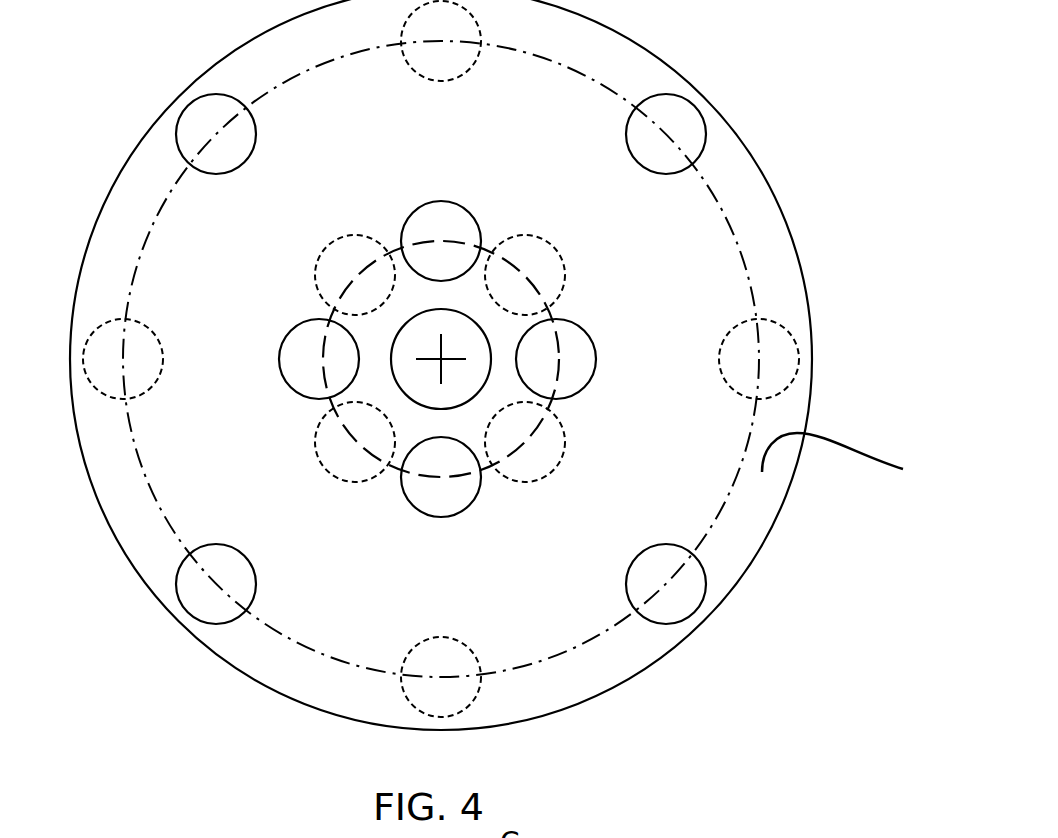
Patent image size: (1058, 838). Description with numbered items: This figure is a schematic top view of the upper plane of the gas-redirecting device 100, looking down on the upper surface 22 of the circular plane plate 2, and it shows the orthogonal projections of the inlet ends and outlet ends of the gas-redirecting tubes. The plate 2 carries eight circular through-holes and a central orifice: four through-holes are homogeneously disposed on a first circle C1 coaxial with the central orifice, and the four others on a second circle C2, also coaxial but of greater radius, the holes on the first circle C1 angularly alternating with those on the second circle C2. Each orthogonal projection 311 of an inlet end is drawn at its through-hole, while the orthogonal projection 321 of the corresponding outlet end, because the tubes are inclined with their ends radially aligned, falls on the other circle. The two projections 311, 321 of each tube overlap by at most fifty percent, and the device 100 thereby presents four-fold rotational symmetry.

The gas-redirecting device 100 is at (59, 81).
The circular plane plate 2 is at (125, 238).
The upper surface 22 is at (851, 457).
The orthogonal projection of the inlet end 311 is at (688, 118).
The orthogonal projection of the outlet end 321 is at (783, 358).
The first circle C1 is at (490, 247).
The second circle C2 is at (750, 242).